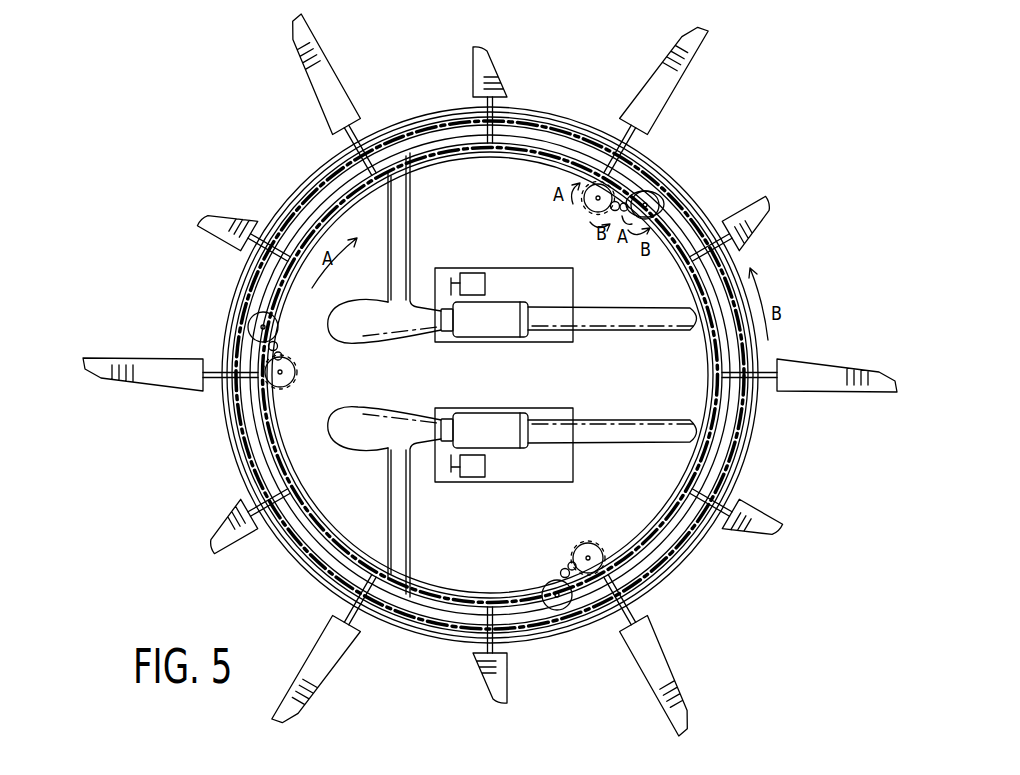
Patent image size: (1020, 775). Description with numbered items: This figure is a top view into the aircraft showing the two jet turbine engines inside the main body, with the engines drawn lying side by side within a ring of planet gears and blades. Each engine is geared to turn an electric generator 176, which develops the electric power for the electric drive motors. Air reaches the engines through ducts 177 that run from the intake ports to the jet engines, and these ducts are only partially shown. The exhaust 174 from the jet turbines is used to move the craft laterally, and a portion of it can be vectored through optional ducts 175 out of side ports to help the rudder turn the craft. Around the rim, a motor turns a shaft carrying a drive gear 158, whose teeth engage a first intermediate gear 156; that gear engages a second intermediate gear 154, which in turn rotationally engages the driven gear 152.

The driven gear 152 is at (668, 203).
The second intermediate gear 154 is at (626, 202).
The first intermediate gear 156 is at (618, 202).
The drive gear 158 is at (588, 212).
The exhaust 174 is at (336, 413).
The ducts 175 is at (400, 245).
The electric generators 176 is at (476, 273).
The ducts 177 is at (598, 426).